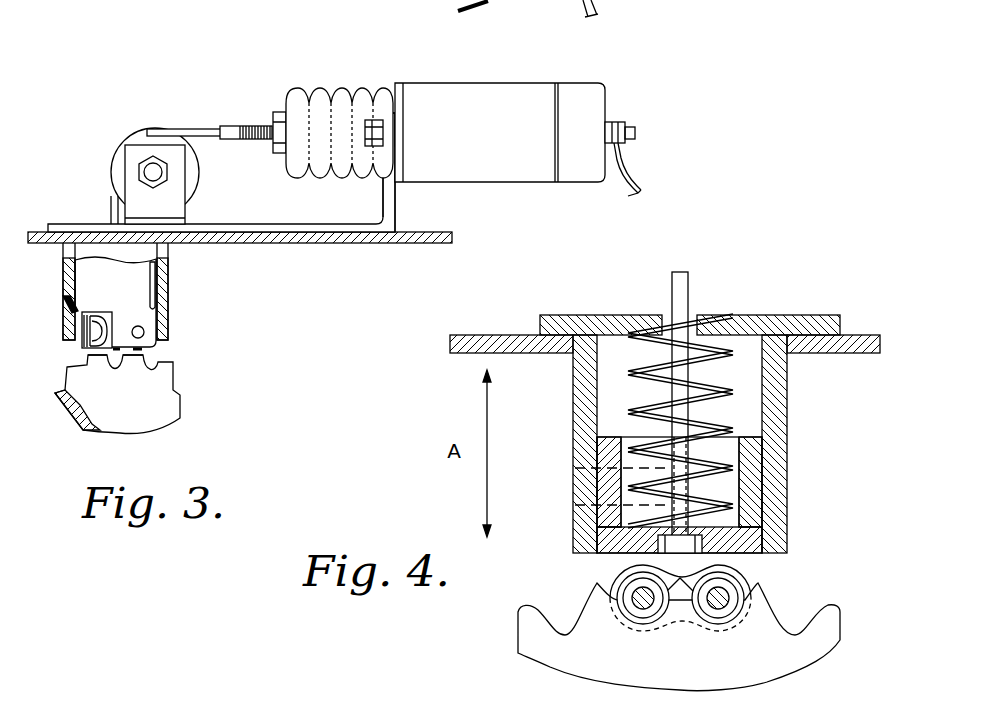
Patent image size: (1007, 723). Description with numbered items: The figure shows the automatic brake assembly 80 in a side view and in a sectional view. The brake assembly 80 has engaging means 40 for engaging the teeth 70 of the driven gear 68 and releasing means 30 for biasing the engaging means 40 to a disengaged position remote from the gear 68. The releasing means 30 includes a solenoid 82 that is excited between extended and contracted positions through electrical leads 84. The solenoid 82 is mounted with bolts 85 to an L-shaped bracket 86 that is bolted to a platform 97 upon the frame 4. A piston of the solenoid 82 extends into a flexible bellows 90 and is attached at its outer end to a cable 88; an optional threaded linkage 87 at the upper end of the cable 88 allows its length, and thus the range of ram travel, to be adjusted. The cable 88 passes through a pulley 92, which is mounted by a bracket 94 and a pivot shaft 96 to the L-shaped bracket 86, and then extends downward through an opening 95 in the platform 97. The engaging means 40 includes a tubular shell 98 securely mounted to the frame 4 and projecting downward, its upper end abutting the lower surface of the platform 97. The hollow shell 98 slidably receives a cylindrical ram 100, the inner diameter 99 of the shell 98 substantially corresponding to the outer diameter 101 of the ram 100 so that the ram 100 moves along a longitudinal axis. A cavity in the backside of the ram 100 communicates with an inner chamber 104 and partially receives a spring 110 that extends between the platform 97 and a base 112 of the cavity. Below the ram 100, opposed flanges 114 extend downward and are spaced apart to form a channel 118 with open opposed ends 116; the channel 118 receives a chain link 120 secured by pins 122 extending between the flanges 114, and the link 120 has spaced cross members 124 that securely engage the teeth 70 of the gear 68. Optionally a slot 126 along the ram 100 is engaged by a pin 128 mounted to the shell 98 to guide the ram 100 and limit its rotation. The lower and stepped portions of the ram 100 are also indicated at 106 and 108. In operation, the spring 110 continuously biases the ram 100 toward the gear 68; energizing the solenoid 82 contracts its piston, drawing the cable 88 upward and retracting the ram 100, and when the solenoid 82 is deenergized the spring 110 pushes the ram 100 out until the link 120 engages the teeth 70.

In FIG. 3, the frame 4 is at (410, 244).
In FIG. 4, the frame 4 is at (530, 335).
In FIG. 3, the releasing means 30 is at (430, 60).
In FIG. 3, the engaging means 40 is at (300, 322).
In FIG. 3, the driven gear 68 is at (140, 423).
In FIG. 3, the teeth 70 is at (126, 374).
In FIG. 3, the brake assembly 80 is at (176, 38).
In FIG. 3, the solenoid 82 is at (535, 87).
In FIG. 3, the electrical leads 84 is at (636, 176).
In FIG. 3, the bolts 85 is at (414, 134).
In FIG. 3, the L-shaped bracket 86 is at (391, 192).
In FIG. 3, the threaded linkage 87 is at (259, 126).
In FIG. 3, the cable 88 is at (207, 128).
In FIG. 4, the cable 88 is at (690, 282).
In FIG. 3, the flexible bellows 90 is at (318, 90).
In FIG. 3, the pulley 92 is at (147, 135).
In FIG. 3, the bracket 94 is at (130, 207).
In FIG. 4, the opening 95 is at (668, 318).
In FIG. 3, the pivot shaft 96 is at (150, 171).
In FIG. 3, the platform 97 is at (281, 223).
In FIG. 4, the platform 97 is at (800, 318).
In FIG. 3, the tubular shell 98 is at (168, 268).
In FIG. 4, the tubular shell 98 is at (780, 377).
In FIG. 4, the inner diameter 99 is at (762, 428).
In FIG. 3, the cylindrical ram 100 is at (86, 275).
In FIG. 4, the cylindrical ram 100 is at (760, 546).
In FIG. 4, the outer diameter 101 is at (772, 460).
In FIG. 4, the inner chamber 104 is at (664, 553).
In FIG. 4, the plunger bottom 106 is at (605, 543).
In FIG. 4, the plunger bottom 108 is at (708, 553).
In FIG. 4, the spring 110 is at (740, 405).
In FIG. 4, the base 112 is at (755, 505).
In FIG. 3, the flanges 114 is at (145, 318).
In FIG. 3, the open opposed ends 116 is at (66, 302).
In FIG. 3, the channel 118 is at (97, 313).
In FIG. 3, the chain link 120 is at (88, 332).
In FIG. 4, the chain link 120 is at (612, 585).
In FIG. 3, the pins 122 is at (143, 334).
In FIG. 4, the cross members 124 is at (728, 607).
In FIG. 3, the slot 126 is at (156, 288).
In FIG. 4, the slot 126 is at (586, 505).
In FIG. 4, the pin 128 is at (590, 469).